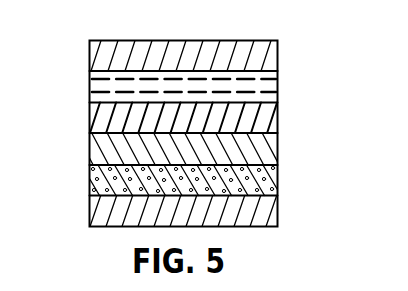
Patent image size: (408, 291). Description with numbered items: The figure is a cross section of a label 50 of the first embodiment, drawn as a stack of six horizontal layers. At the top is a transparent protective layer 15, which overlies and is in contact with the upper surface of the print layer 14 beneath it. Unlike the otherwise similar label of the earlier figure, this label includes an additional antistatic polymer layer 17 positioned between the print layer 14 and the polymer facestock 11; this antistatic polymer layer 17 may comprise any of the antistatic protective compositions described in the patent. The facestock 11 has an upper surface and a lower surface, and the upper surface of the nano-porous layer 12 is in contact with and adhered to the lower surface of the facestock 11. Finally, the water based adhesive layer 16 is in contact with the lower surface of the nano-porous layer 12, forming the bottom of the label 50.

The label 50 is at (109, 31).
The transparent protective layer 15 is at (279, 52).
The print layer 14 is at (89, 90).
The antistatic polymer layer 17 is at (89, 118).
The polymer facestock 11 is at (89, 147).
The nano-porous layer 12 is at (89, 180).
The water based adhesive layer 16 is at (279, 207).